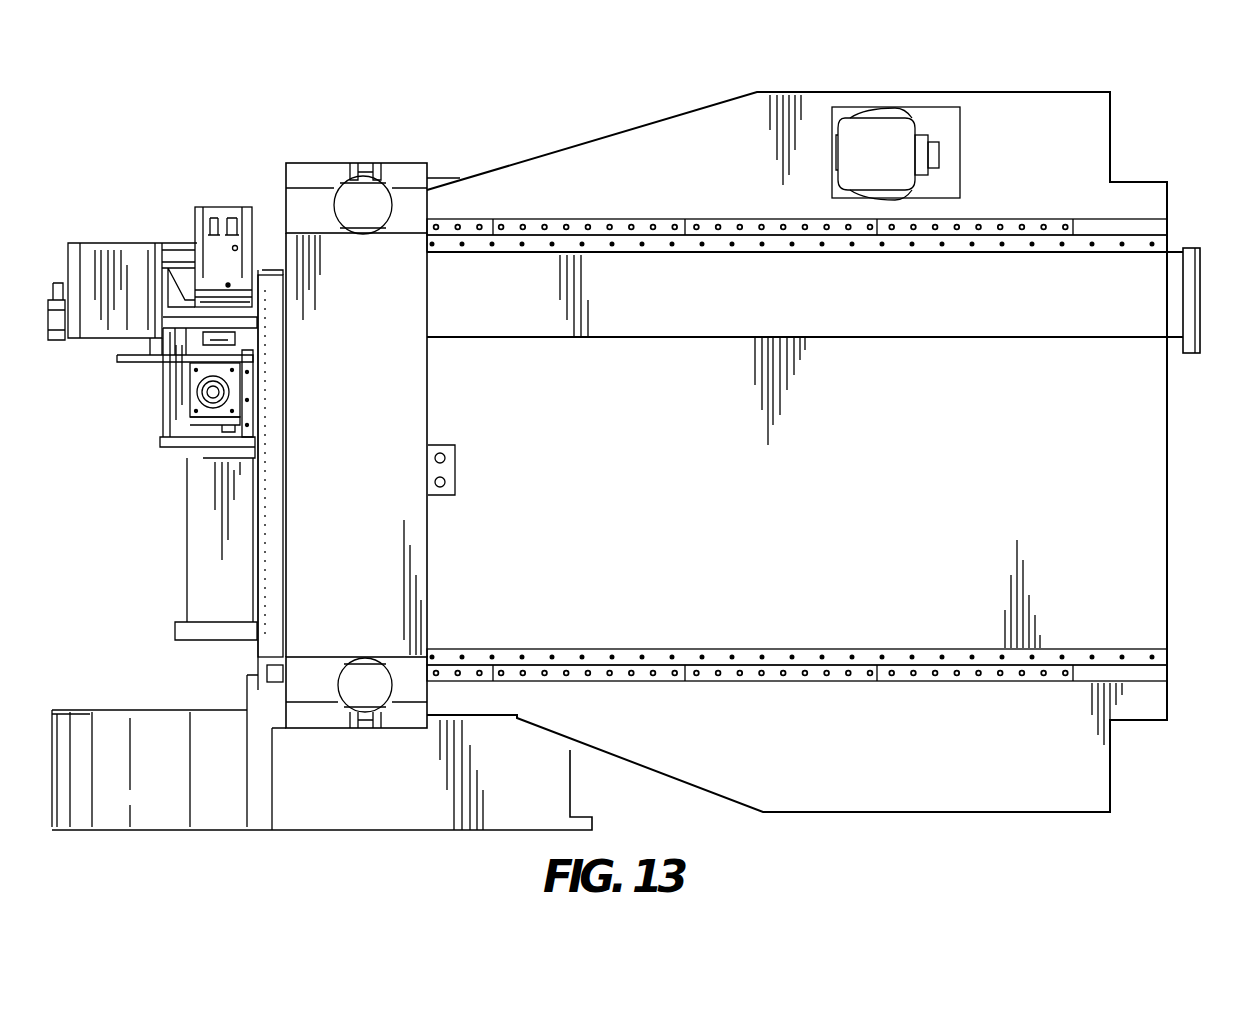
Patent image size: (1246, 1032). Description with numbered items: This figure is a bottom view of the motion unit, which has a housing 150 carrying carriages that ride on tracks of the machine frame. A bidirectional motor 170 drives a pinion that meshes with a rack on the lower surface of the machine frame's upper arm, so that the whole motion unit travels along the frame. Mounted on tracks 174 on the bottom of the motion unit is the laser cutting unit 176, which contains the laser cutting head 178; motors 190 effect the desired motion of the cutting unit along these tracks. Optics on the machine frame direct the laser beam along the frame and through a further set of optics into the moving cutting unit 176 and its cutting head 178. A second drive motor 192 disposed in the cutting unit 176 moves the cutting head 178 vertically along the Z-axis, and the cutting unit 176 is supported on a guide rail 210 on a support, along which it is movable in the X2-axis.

The housing 150 is at (1167, 497).
The bidirectional motor 170 is at (915, 130).
The tracks 174 is at (1167, 663).
The laser cutting unit 176 is at (318, 162).
The laser cutting head 178 is at (203, 397).
The motors 190 is at (370, 200).
The second drive motor 192 is at (225, 207).
The guide rail 210 is at (262, 613).